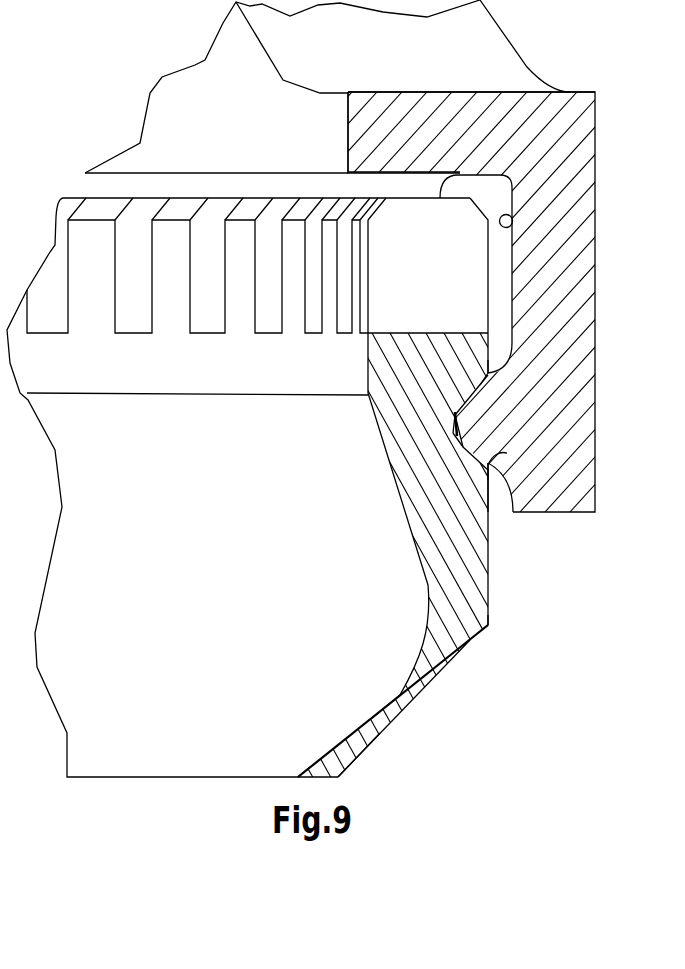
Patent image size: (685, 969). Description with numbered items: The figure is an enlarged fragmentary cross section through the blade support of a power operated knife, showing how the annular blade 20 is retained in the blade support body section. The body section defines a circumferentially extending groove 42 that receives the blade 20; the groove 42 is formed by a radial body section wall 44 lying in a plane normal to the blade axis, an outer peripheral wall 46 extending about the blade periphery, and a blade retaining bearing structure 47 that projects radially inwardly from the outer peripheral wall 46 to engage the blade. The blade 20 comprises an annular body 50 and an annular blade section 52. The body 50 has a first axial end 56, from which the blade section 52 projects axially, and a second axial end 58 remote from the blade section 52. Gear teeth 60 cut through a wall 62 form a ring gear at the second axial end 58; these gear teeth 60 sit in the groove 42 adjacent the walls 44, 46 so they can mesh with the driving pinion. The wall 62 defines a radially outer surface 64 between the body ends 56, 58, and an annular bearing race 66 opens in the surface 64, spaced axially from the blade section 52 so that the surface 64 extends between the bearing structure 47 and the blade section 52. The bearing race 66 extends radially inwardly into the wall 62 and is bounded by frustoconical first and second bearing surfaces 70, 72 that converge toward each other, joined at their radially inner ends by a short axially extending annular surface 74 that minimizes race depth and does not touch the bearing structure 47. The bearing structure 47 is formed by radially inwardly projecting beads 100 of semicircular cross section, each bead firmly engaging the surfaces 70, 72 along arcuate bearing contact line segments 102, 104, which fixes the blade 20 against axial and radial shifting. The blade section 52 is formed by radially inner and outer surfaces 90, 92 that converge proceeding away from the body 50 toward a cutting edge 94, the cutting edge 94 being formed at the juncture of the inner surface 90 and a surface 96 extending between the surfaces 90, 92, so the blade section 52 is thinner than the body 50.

The annular blade 20 is at (277, 451).
The groove 42 is at (512, 212).
The radial body section wall 44 is at (450, 127).
The outer peripheral wall 46 is at (568, 237).
The blade retaining bearing structure 47 is at (487, 435).
The annular body 50 is at (407, 525).
The annular blade section 52 is at (437, 678).
The first axial end 56 is at (488, 625).
The second axial end 58 is at (458, 176).
The gear teeth 60 is at (424, 256).
The wall 62 is at (462, 540).
The radially outer surface 64 is at (490, 342).
The annular bearing race 66 is at (457, 417).
The first bearing surface 70 is at (488, 377).
The second bearing surface 72 is at (505, 453).
The axially extending annular surface 74 is at (456, 434).
The radially inner surface 90 is at (368, 716).
The radially outer surface 92 is at (380, 733).
The cutting edge 94 is at (298, 777).
The surface 96 is at (320, 777).
The beads 100 is at (457, 437).
The arcuate bearing contact line segment 102 is at (473, 388).
The arcuate bearing contact line segment 104 is at (488, 468).